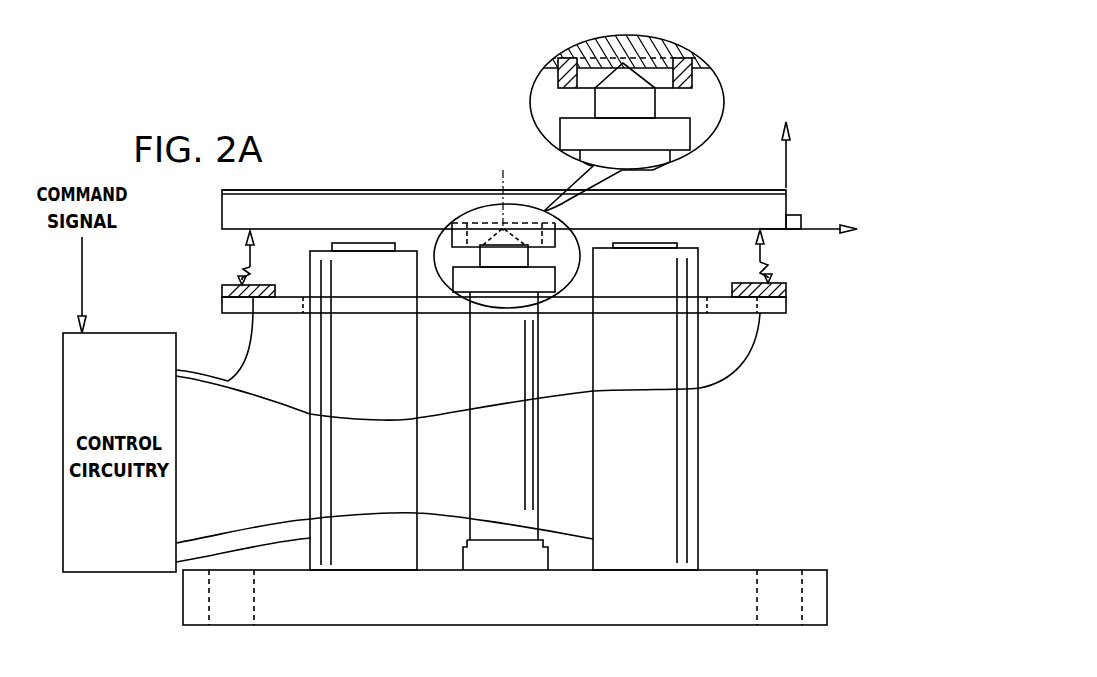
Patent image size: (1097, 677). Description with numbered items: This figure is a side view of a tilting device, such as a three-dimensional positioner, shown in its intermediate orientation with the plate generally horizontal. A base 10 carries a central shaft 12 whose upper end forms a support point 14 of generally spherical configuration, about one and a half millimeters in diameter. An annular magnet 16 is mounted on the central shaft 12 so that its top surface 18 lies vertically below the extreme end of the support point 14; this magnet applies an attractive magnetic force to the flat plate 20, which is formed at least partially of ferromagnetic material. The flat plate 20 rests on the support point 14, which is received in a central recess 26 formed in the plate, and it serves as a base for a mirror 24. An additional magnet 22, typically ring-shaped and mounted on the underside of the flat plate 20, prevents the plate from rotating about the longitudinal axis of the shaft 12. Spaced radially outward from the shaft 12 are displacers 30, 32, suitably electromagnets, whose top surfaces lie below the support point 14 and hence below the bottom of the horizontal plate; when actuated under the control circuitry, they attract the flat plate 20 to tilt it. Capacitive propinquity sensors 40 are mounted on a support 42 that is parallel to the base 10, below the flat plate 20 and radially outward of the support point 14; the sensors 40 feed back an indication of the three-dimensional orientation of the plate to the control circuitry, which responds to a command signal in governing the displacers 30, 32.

The base 10 is at (295, 613).
The central shaft 12 is at (522, 422).
The support point 14 is at (637, 58).
The annular magnet 16 is at (545, 278).
The top surface 18 is at (450, 257).
The flat plate 20 is at (235, 212).
The additional magnet 22 is at (443, 232).
The mirror 24 is at (373, 190).
The central recess 26 is at (623, 63).
The displacer 30 is at (690, 490).
The displacer 32 is at (317, 467).
The capacitive sensor 40 is at (222, 290).
The support 42 is at (786, 305).